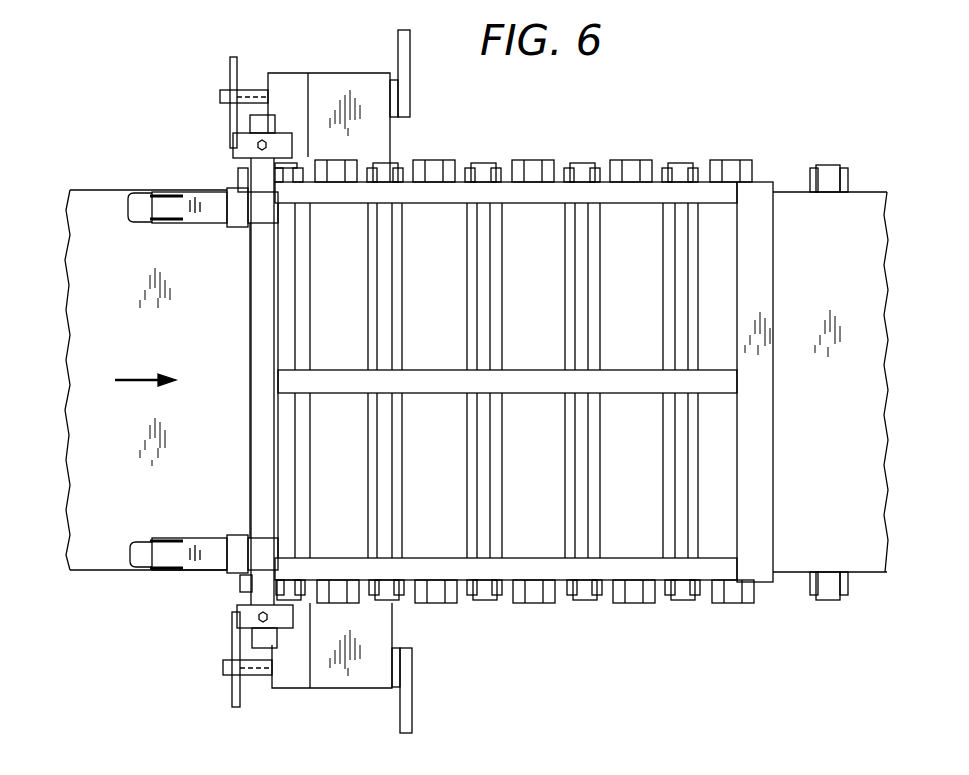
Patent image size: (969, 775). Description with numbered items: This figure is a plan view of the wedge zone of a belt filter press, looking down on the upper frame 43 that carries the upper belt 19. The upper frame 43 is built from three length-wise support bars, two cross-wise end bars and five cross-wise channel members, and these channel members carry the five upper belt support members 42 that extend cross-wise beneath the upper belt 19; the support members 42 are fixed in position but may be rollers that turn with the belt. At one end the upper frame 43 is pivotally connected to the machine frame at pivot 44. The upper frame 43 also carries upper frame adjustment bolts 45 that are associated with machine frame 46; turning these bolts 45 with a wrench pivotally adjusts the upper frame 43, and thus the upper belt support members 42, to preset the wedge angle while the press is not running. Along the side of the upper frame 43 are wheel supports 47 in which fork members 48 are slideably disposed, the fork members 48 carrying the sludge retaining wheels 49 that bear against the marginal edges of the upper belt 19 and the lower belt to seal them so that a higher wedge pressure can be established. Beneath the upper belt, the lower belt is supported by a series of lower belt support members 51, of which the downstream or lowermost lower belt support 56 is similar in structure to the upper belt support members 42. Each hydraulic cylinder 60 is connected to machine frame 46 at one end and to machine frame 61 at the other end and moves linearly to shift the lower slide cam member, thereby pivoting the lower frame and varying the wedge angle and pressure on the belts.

The upper belt 19 is at (95, 207).
The upper belt support members 42 is at (485, 237).
The upper frame 43 is at (473, 572).
The pivot 44 is at (760, 172).
The upper frame adjustment bolts 45 is at (262, 140).
The machine frame 46 is at (230, 68).
The wheel supports 47 is at (240, 543).
The fork members 48 is at (215, 562).
The sludge retaining wheels 49 is at (142, 562).
The lower belt support members 51 is at (238, 175).
The lowermost lower belt support 56 is at (830, 165).
The hydraulic cylinder 60 is at (408, 98).
The machine frame 61 is at (405, 45).